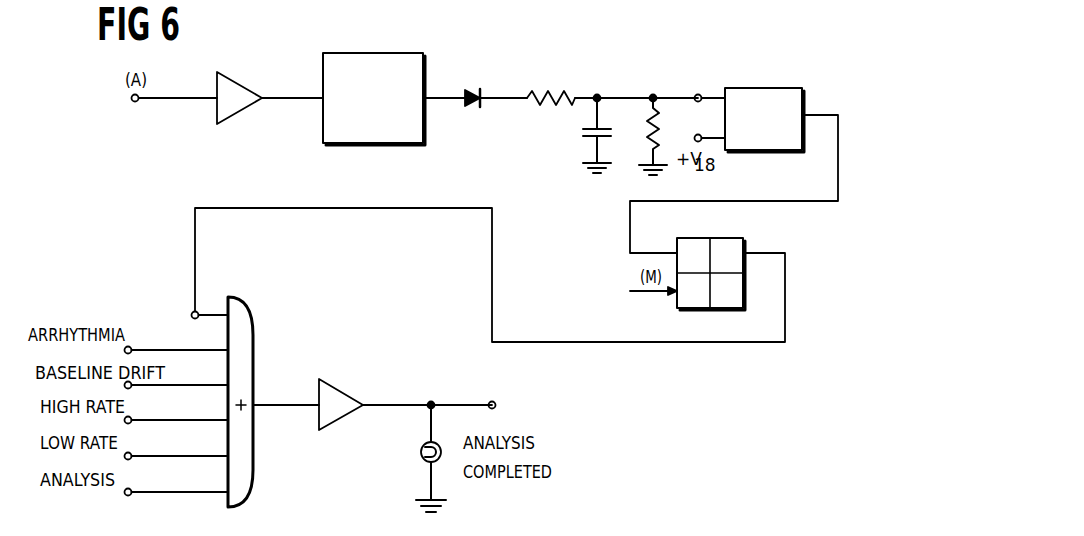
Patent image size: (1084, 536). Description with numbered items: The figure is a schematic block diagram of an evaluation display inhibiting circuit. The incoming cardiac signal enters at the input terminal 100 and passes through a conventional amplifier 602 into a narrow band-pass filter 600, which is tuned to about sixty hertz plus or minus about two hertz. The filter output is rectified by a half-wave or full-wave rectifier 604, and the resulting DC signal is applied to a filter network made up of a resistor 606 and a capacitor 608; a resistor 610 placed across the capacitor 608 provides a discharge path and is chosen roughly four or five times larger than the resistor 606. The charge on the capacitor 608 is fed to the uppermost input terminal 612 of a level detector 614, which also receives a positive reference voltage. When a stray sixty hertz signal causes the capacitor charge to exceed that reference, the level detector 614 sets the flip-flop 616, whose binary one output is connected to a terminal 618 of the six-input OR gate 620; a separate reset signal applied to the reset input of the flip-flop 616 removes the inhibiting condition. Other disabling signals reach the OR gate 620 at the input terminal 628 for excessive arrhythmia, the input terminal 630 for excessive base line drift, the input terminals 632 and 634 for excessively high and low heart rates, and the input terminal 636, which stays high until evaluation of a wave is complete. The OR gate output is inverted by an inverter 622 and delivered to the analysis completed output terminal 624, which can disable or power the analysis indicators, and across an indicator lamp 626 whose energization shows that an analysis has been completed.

The input terminal 100 is at (148, 111).
The narrow band-pass filter 600 is at (400, 53).
The amplifier 602 is at (232, 80).
The rectifier 604 is at (467, 88).
The resistor 606 is at (566, 90).
The capacitor 608 is at (590, 133).
The resistor 610 is at (652, 130).
The input terminal 612 is at (697, 94).
The level detector 614 is at (771, 87).
The flip-flop 616 is at (736, 222).
The terminal 618 is at (198, 311).
The OR gate 620 is at (255, 326).
The inverter 622 is at (336, 389).
The output terminal 624 is at (490, 400).
The indicator lamp 626 is at (421, 452).
The input terminal 628 is at (131, 348).
The input terminal 630 is at (135, 388).
The input terminal 632 is at (135, 423).
The input terminal 634 is at (135, 458).
The input terminal 636 is at (135, 494).